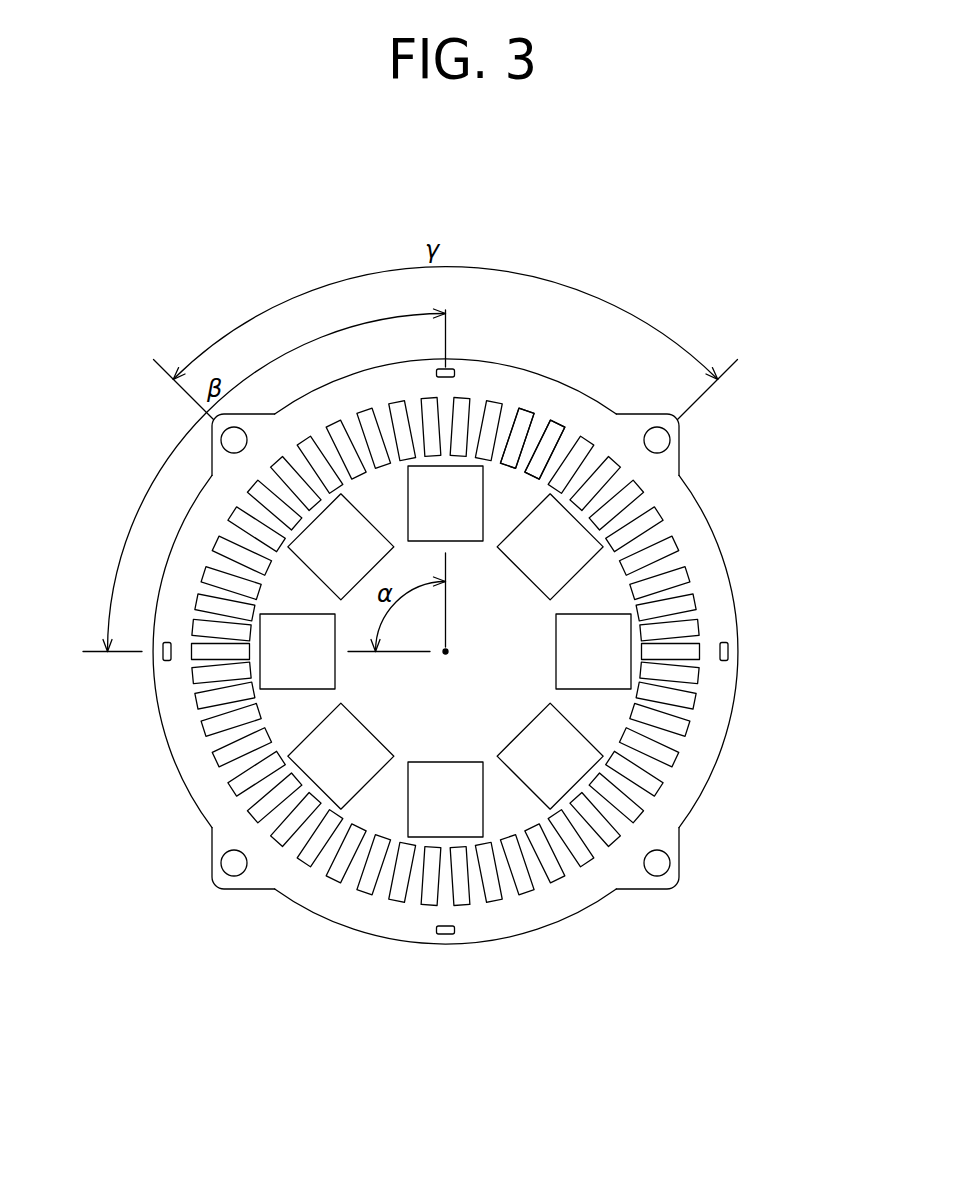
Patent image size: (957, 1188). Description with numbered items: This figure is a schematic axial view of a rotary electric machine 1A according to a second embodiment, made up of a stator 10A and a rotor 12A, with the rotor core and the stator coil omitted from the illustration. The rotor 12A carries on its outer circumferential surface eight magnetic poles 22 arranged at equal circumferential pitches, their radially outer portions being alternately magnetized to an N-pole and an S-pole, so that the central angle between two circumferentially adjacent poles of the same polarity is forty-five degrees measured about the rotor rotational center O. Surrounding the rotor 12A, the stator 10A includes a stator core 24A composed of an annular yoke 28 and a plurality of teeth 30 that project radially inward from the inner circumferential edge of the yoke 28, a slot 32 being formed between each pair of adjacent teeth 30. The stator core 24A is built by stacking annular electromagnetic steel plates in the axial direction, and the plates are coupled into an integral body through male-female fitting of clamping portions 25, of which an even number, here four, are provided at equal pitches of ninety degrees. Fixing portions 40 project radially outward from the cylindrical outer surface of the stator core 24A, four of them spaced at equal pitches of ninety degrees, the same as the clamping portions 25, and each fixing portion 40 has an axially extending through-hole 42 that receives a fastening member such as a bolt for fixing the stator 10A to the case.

The rotary electric machine 1A is at (693, 294).
The stator 10A is at (750, 522).
The rotor 12A is at (600, 713).
The magnetic pole 22 is at (460, 541).
The stator core 24A is at (737, 605).
The clamping portion 25 is at (456, 367).
The yoke 28 is at (512, 395).
The tooth 30 is at (537, 433).
The slot 32 is at (550, 430).
The fixing portion 40 is at (247, 413).
The through-hole 42 is at (653, 448).
The rotor rotational center O is at (449, 651).